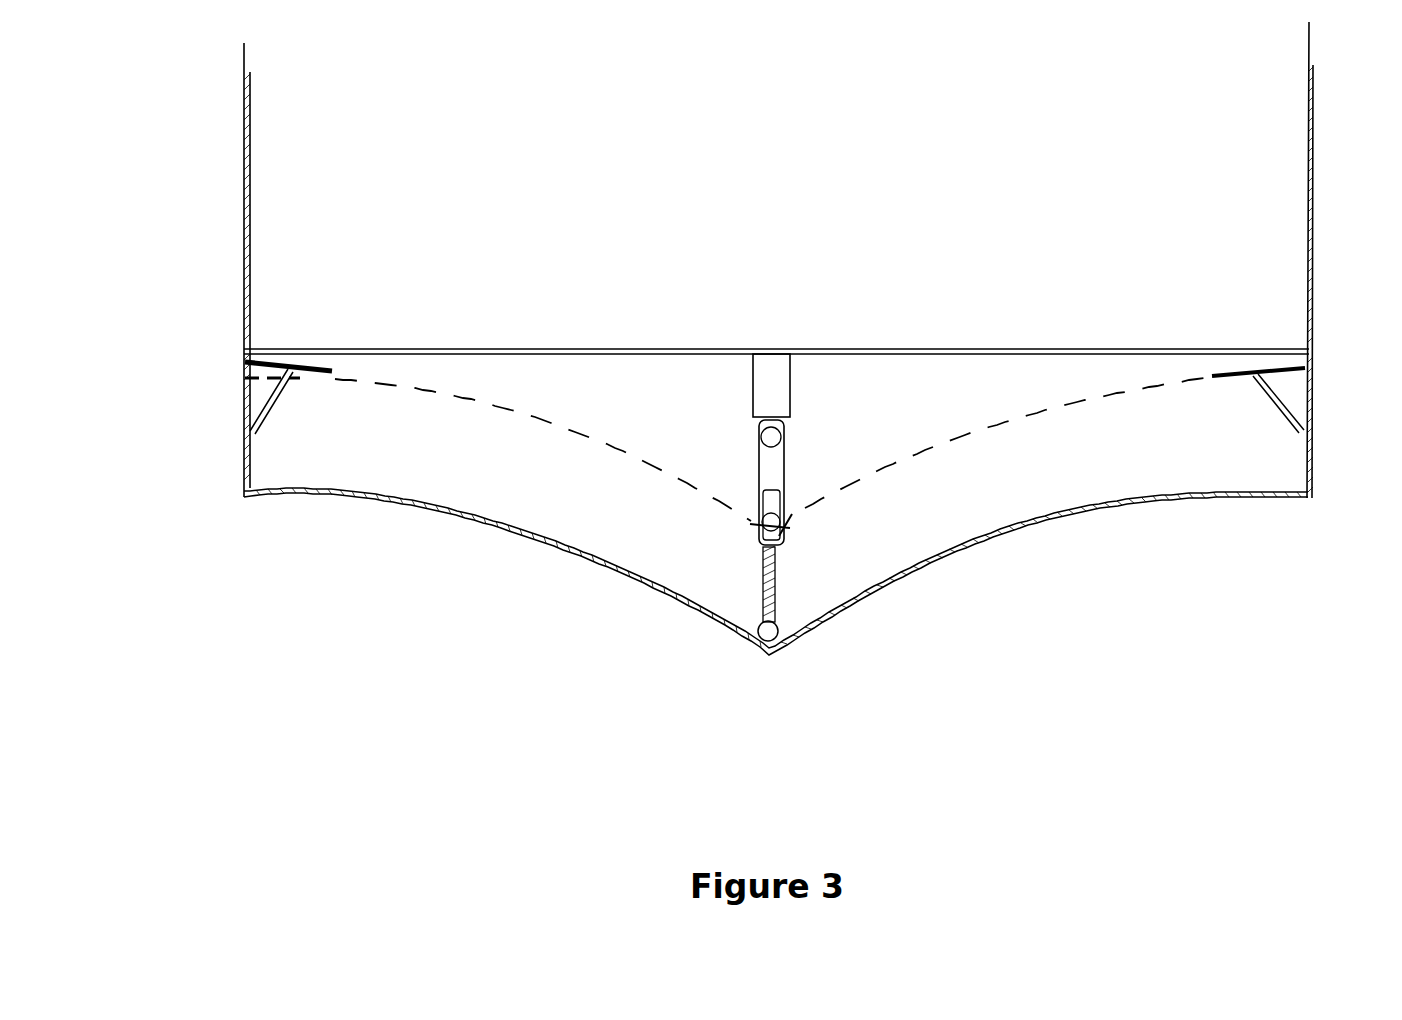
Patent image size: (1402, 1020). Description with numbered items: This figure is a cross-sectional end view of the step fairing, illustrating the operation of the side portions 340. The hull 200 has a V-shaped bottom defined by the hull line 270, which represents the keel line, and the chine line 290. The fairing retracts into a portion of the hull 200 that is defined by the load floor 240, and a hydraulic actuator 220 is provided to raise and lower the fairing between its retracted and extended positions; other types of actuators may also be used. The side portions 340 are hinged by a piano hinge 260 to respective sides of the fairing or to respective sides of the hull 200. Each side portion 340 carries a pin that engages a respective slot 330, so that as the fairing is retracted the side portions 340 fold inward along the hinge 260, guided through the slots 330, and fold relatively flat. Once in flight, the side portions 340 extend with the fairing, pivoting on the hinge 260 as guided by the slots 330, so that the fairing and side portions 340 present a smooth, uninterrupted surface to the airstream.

The hull 200 is at (253, 162).
The hydraulic actuator 220 is at (788, 455).
The load floor 240 is at (606, 349).
The piano hinge 260 is at (238, 480).
The hull line 270 is at (770, 662).
The chine line 290 is at (1313, 502).
The slot 330 is at (272, 412).
The side portions 340 is at (315, 360).